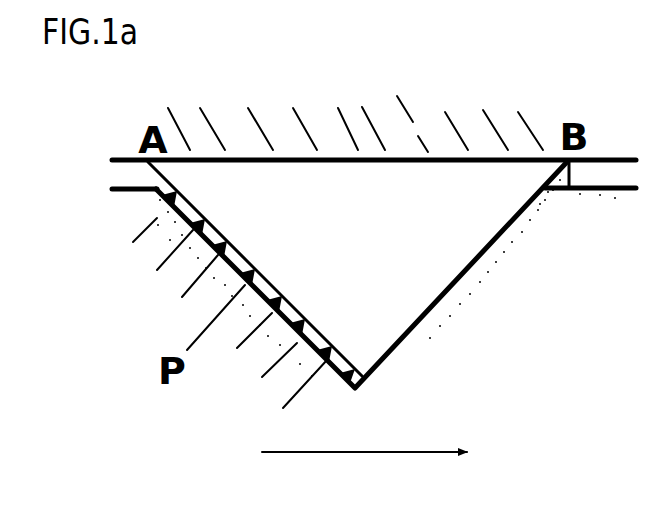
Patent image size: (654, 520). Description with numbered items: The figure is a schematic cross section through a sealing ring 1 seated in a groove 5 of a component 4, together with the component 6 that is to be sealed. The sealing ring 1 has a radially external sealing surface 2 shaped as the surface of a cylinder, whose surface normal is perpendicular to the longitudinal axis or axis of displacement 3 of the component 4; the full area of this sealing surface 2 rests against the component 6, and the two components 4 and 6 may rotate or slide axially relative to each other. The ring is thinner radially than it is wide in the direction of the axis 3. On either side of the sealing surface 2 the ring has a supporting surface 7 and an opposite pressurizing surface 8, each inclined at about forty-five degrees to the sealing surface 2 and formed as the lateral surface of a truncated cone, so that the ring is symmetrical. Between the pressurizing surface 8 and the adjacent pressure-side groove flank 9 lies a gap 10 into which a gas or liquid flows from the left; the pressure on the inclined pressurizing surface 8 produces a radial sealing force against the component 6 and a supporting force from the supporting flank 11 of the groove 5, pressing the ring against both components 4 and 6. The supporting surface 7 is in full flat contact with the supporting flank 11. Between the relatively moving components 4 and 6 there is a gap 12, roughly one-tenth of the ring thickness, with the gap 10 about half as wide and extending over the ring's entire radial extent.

The sealing ring 1 is at (407, 302).
The sealing surface 2 is at (393, 153).
The axis of displacement 3 is at (382, 453).
The component 4 is at (143, 242).
The groove 5 is at (408, 342).
The component to be sealed 6 is at (317, 150).
The supporting surface 7 is at (458, 273).
The pressurizing surface 8 is at (243, 252).
The pressure-side groove flank 9 is at (288, 327).
The gap 10 is at (210, 244).
The supporting flank 11 is at (465, 282).
The gap 12 is at (598, 172).